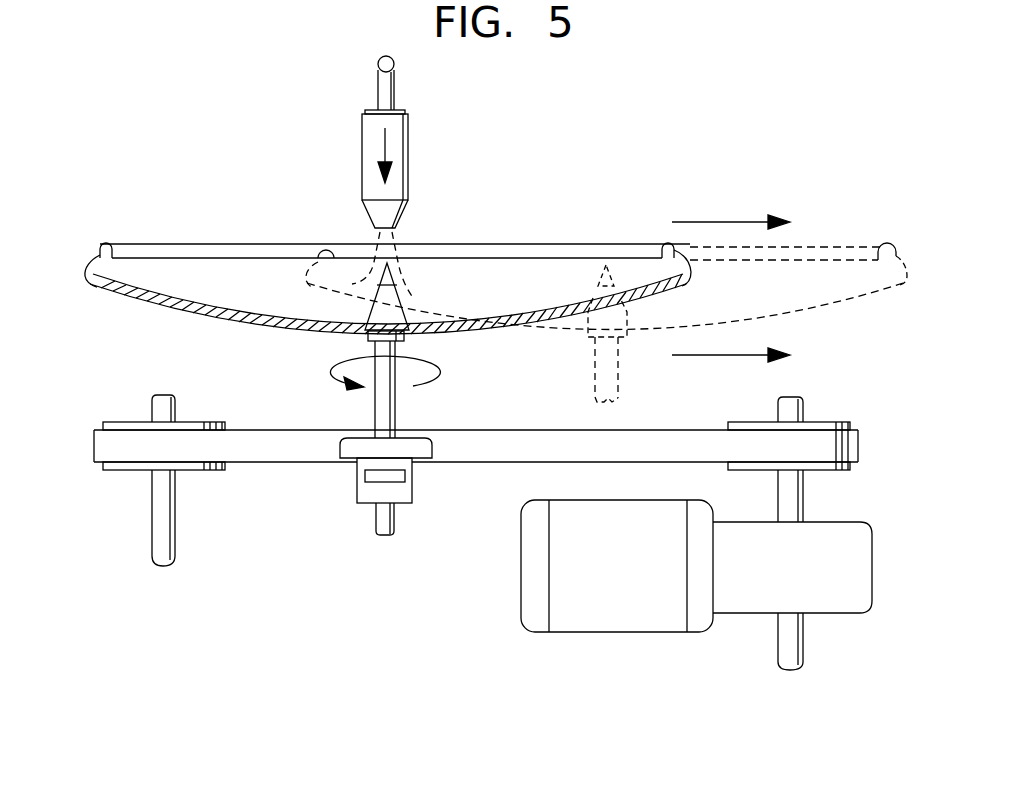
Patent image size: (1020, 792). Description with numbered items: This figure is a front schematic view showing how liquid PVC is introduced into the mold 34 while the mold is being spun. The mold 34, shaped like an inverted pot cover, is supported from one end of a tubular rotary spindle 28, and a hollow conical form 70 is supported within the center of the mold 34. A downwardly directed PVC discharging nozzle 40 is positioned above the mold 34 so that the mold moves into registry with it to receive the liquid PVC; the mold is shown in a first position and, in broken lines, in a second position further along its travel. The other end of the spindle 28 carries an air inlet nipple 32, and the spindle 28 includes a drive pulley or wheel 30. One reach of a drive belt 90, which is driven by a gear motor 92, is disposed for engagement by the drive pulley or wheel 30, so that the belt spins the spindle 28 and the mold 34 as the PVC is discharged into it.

The rotary spindle 28 is at (388, 403).
The drive pulley or wheel 30 is at (423, 445).
The air inlet nipple 32 is at (378, 522).
The mold 34 is at (166, 300).
The PVC discharging nozzle 40 is at (362, 148).
The hollow conical form 70 is at (390, 297).
The drive belt 90 is at (262, 458).
The gear motor 92 is at (560, 570).